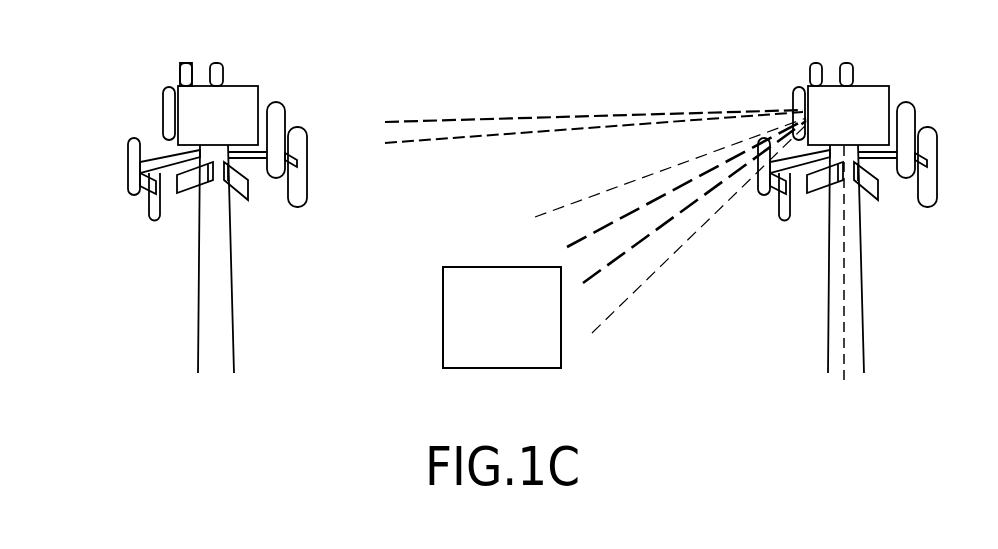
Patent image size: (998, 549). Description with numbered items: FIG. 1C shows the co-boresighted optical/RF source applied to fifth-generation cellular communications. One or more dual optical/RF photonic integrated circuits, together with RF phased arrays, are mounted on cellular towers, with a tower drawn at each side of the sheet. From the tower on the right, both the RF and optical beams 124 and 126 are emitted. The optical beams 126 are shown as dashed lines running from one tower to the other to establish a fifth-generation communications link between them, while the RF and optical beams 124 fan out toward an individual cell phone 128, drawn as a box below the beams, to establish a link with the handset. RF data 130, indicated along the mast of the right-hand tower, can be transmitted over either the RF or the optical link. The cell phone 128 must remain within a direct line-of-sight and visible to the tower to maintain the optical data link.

The RF beam 124 is at (660, 263).
The optical beam 126 is at (505, 118).
The cell phone 128 is at (451, 270).
The RF data 130 is at (901, 265).